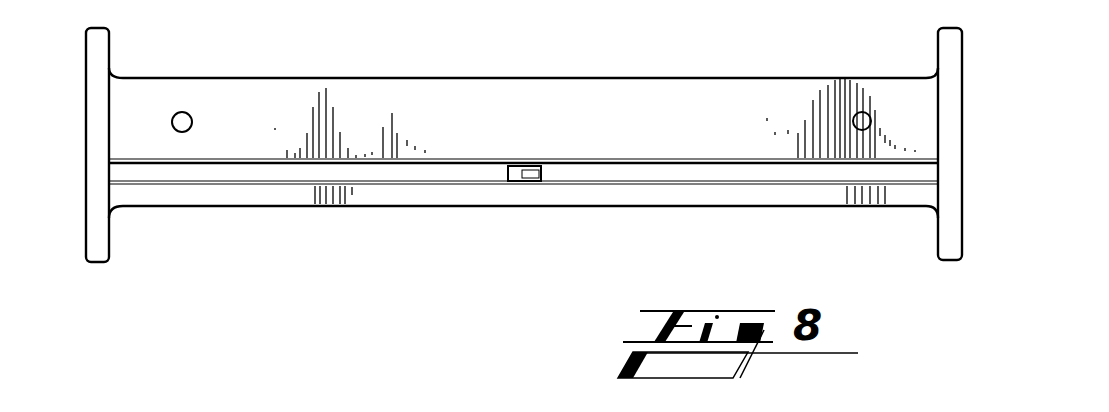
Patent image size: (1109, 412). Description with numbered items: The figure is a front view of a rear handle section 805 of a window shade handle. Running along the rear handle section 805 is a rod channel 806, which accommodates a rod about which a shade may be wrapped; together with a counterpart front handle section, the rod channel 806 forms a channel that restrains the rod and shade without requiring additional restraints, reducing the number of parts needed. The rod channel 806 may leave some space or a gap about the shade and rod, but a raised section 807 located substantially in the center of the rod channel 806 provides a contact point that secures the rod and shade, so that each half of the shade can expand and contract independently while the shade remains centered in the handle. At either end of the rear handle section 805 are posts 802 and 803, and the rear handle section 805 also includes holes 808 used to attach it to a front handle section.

The post 802 is at (97, 263).
The post 803 is at (943, 262).
The rear handle section 805 is at (750, 203).
The rod channel 806 is at (425, 170).
The raised section 807 is at (523, 181).
The holes 808 is at (185, 112).